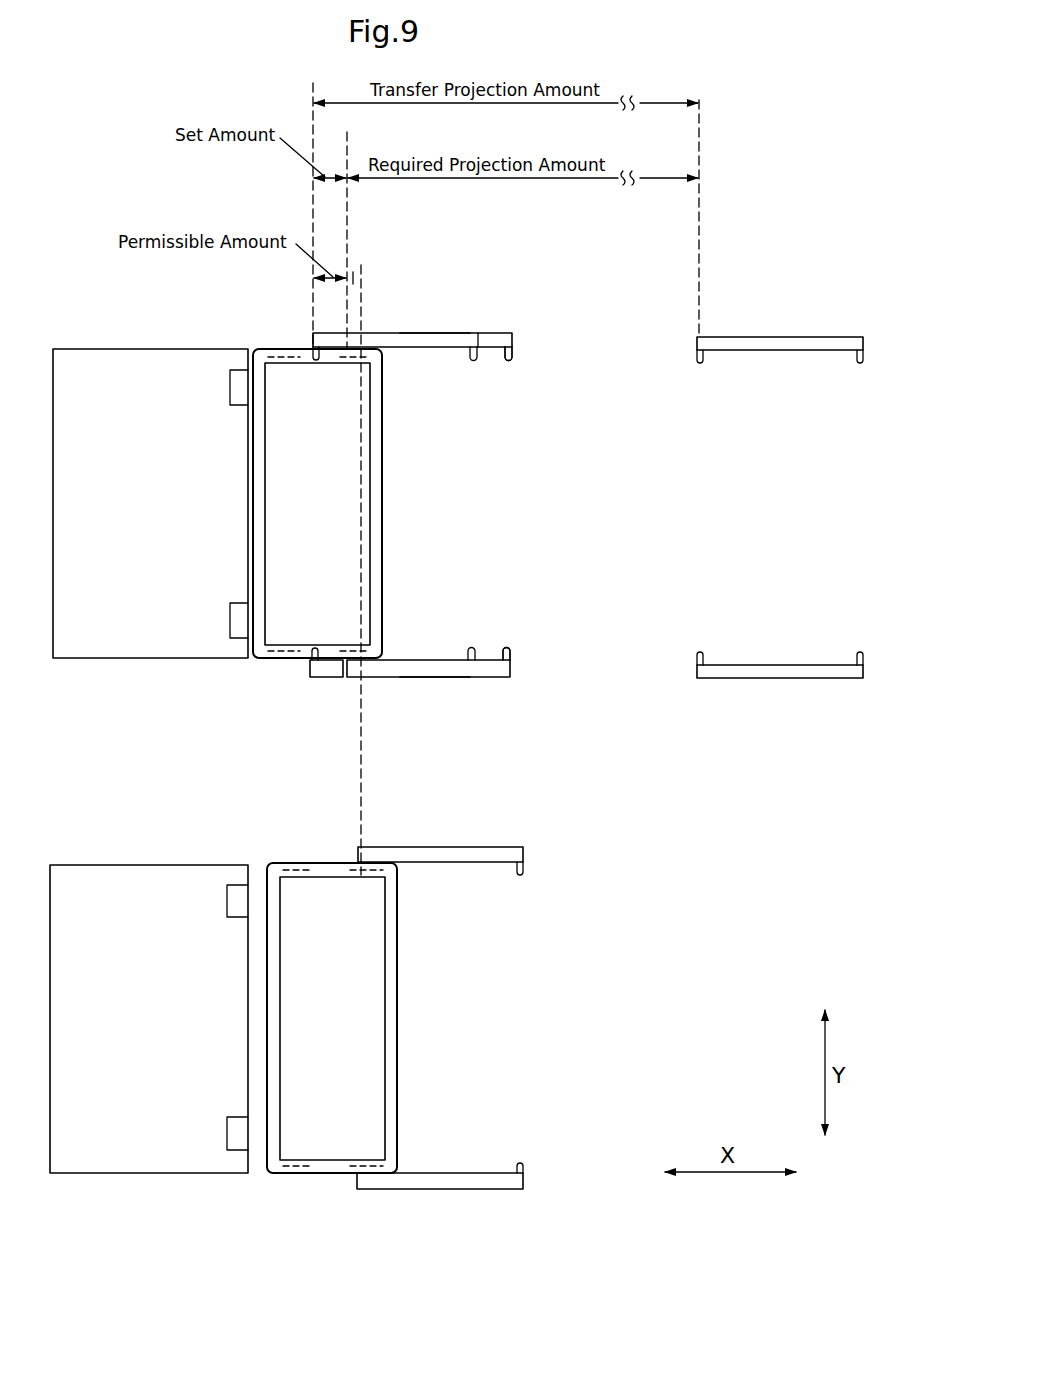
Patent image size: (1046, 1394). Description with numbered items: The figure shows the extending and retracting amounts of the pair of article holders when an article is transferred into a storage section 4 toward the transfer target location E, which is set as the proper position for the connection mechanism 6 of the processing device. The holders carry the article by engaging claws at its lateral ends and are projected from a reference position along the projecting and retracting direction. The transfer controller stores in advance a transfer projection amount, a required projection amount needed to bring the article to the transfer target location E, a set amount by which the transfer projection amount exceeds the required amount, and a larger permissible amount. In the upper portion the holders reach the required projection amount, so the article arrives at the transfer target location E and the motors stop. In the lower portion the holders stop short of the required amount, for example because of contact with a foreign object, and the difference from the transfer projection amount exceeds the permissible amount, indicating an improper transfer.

The connection mechanism 6 is at (118, 375).
The storage section 4 is at (243, 833).
The transfer target location E is at (258, 868).